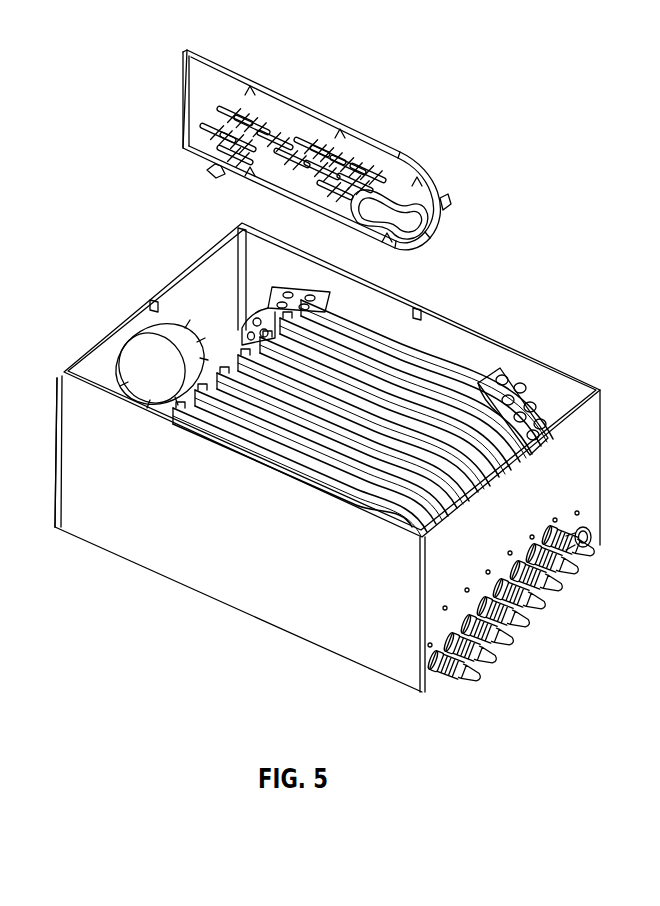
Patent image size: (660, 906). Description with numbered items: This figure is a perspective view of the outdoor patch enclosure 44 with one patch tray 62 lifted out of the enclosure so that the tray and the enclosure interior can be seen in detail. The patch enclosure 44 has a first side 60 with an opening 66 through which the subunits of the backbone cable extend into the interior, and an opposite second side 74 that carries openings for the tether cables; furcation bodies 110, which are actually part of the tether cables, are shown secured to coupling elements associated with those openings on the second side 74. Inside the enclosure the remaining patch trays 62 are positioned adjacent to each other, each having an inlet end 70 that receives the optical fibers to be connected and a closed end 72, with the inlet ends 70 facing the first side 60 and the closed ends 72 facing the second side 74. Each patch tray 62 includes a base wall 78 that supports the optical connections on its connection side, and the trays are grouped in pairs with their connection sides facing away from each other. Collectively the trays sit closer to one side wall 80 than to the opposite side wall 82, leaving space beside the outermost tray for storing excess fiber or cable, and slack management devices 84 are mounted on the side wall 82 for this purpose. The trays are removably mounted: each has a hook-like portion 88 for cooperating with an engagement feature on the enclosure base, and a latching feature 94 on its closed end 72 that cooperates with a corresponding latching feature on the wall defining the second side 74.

The patch enclosure 44 is at (53, 548).
The first side 60 is at (183, 263).
The patch tray 62 is at (418, 367).
The opening 66 is at (150, 343).
The inlet end 70 is at (184, 70).
The closed end 72 is at (428, 176).
The second side 74 is at (596, 474).
The base wall 78 is at (225, 92).
The side wall 80 is at (163, 573).
The opposite side wall 82 is at (530, 358).
The slack management devices 84 is at (302, 285).
The hook-like portion 88 is at (208, 173).
The latching feature 94 is at (450, 205).
The furcation bodies 110 is at (452, 675).